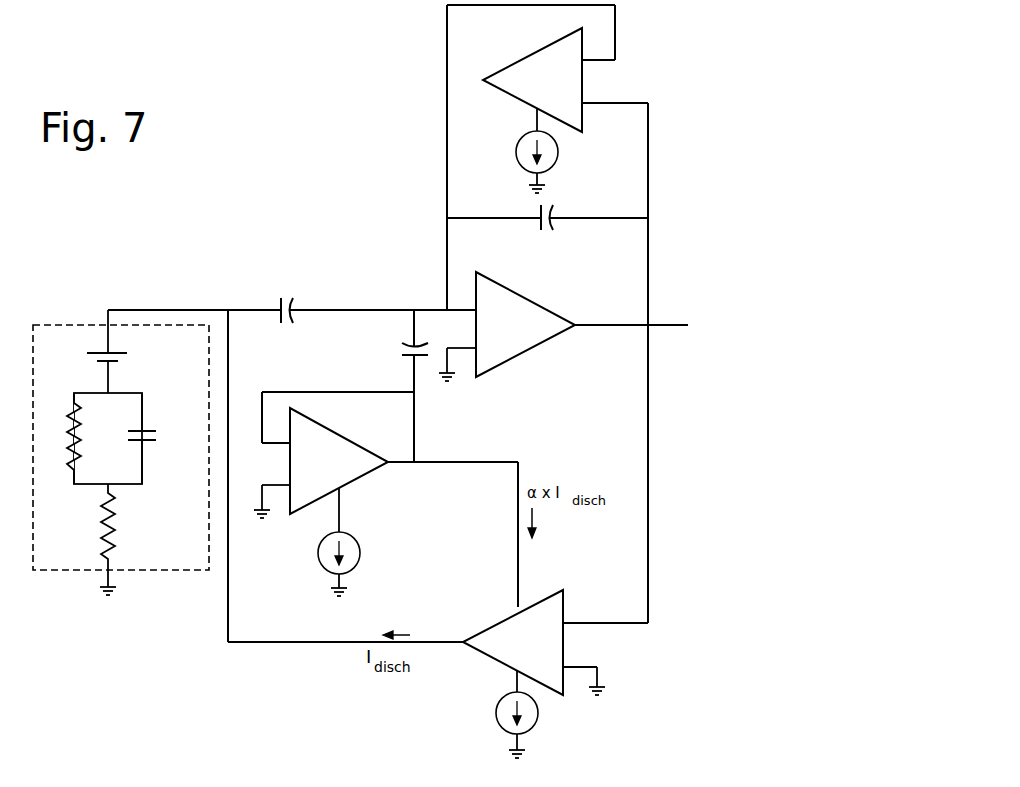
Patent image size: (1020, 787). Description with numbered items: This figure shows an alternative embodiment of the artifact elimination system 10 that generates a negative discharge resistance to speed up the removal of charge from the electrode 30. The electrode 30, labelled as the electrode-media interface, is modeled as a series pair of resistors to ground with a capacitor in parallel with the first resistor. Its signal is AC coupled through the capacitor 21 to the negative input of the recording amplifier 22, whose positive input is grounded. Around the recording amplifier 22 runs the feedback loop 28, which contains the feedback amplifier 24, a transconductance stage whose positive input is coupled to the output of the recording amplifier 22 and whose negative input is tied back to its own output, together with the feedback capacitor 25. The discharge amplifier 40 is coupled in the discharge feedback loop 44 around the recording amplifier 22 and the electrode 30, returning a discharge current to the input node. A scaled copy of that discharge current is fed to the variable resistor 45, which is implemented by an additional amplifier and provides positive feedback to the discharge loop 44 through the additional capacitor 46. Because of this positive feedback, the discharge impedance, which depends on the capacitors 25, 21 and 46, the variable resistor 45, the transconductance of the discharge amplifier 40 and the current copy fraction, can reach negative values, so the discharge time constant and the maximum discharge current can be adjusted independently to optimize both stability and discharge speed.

The artifact elimination system 10 is at (226, 78).
The capacitor 21 is at (279, 311).
The recording amplifier 22 is at (526, 296).
The feedback amplifier 24 is at (517, 58).
The feedback capacitor 25 is at (552, 212).
The feedback loop 28 is at (584, 157).
The electrode 30 is at (63, 570).
The discharge amplifier 40 is at (492, 623).
The discharge feedback loop 44 is at (708, 510).
The variable resistor 45 is at (338, 433).
The additional capacitor 46 is at (402, 345).